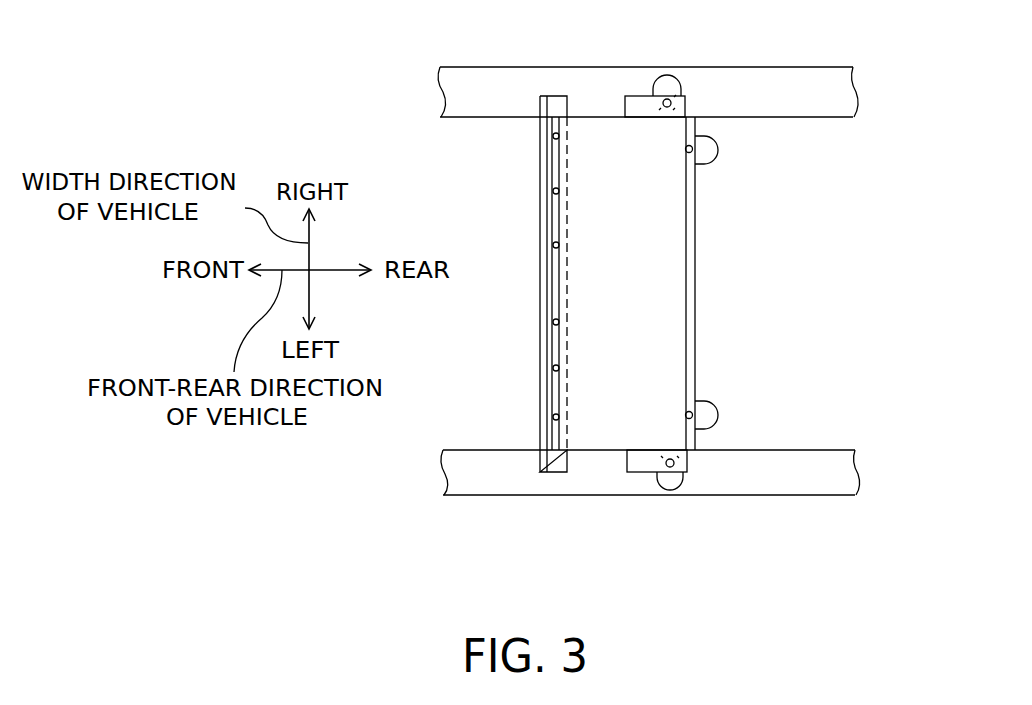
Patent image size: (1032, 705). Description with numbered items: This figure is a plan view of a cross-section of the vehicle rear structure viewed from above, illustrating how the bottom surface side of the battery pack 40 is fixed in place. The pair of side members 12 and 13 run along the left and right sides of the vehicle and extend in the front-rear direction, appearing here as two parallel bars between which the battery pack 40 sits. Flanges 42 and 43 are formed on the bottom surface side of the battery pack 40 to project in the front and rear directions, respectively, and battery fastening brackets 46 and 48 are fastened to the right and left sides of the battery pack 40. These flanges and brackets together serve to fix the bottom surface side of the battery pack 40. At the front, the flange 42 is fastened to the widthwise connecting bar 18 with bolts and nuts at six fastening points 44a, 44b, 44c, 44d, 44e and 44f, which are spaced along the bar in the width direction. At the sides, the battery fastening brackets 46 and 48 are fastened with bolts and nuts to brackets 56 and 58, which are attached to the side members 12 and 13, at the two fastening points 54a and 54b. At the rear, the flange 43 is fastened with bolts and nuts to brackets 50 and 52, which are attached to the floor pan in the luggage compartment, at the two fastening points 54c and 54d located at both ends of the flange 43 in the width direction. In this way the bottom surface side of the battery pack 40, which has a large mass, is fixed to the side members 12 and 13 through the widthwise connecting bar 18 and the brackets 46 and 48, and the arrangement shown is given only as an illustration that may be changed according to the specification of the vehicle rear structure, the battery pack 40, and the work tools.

The side member 12 is at (852, 93).
The side member 13 is at (845, 473).
The widthwise connecting bar 18 is at (560, 463).
The battery pack 40 is at (638, 298).
The flange 42 is at (560, 438).
The flange 43 is at (696, 273).
The fastening point 44a is at (553, 137).
The fastening point 44b is at (553, 191).
The fastening point 44c is at (553, 245).
The fastening point 44d is at (553, 322).
The fastening point 44e is at (553, 368).
The fastening point 44f is at (553, 416).
The battery fastening bracket 46 is at (641, 102).
The battery fastening bracket 48 is at (645, 465).
The bracket 50 is at (718, 150).
The bracket 52 is at (718, 417).
The fastening point 54a is at (667, 112).
The fastening point 54b is at (670, 460).
The fastening point 54c is at (688, 151).
The fastening point 54d is at (688, 413).
The bracket 56 is at (670, 76).
The bracket 58 is at (678, 492).